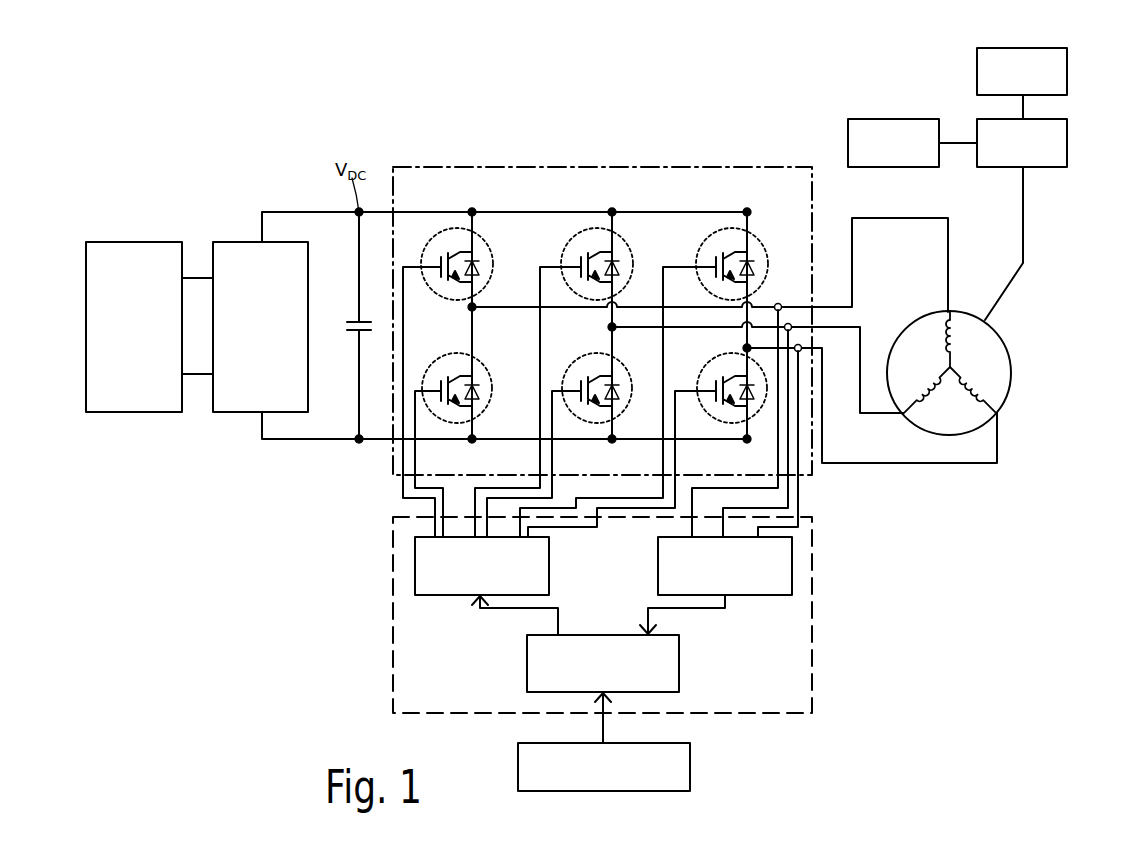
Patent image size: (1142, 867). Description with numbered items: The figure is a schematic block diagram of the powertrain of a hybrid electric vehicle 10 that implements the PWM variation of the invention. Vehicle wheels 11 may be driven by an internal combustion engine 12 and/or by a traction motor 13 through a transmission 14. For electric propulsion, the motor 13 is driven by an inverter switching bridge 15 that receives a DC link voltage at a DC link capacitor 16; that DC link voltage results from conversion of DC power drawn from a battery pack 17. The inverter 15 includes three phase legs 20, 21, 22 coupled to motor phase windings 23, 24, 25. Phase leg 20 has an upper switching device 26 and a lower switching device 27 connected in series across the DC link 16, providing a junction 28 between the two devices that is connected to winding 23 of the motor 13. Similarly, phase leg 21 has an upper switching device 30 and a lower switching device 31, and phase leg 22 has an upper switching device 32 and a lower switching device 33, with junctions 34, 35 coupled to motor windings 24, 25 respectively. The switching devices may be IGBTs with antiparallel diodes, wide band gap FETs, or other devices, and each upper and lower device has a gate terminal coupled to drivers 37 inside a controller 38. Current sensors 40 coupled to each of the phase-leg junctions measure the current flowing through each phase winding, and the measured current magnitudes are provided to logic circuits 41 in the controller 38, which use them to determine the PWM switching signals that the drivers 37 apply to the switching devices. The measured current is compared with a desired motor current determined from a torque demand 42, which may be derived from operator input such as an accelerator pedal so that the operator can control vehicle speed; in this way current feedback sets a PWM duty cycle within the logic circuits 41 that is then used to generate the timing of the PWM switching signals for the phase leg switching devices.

The hybrid electric vehicle 10 is at (226, 110).
The vehicle wheels 11 is at (903, 119).
The internal combustion engine 12 is at (1067, 70).
The traction motor 13 is at (963, 366).
The transmission 14 is at (670, 167).
The inverter switching bridge 15 is at (354, 318).
The DC link capacitor 16 is at (135, 242).
The battery pack 17 is at (237, 242).
The phase leg 20 is at (477, 198).
The phase leg 21 is at (617, 198).
The phase leg 22 is at (752, 198).
The motor phase winding 23 is at (955, 330).
The motor phase winding 24 is at (918, 400).
The motor phase winding 25 is at (990, 390).
The upper switching device 26 is at (491, 244).
The lower switching device 27 is at (484, 368).
The junction 28 is at (470, 308).
The upper switching device 30 is at (631, 244).
The lower switching device 31 is at (622, 368).
The upper switching device 32 is at (768, 250).
The lower switching device 33 is at (754, 418).
The junction 34 is at (610, 328).
The junction 35 is at (745, 348).
The drivers 37 is at (549, 561).
The controller 38 is at (392, 602).
The current sensors 40 is at (760, 595).
The logic circuits 41 is at (526, 660).
The torque demand 42 is at (690, 763).